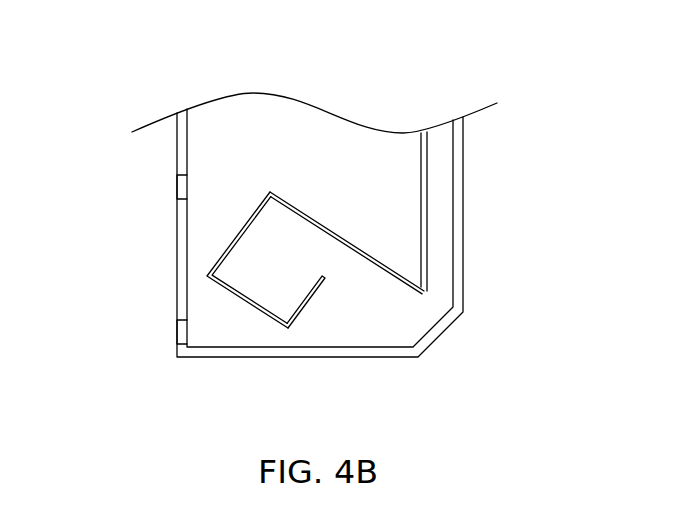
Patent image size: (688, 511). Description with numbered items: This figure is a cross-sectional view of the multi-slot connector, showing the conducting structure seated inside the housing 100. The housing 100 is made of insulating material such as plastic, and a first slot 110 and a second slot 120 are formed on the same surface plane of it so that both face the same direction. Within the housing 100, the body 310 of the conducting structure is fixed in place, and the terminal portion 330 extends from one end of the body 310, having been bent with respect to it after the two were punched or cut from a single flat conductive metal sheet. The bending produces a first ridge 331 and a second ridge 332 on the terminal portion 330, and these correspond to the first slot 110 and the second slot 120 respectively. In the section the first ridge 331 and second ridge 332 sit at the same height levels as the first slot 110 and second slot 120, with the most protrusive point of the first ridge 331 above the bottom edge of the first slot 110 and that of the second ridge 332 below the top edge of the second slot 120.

The housing 100 is at (458, 238).
The first slot 110 is at (173, 188).
The second slot 120 is at (173, 335).
The body 310 is at (425, 154).
The terminal portion 330 is at (360, 236).
The first ridge 331 is at (272, 190).
The second ridge 332 is at (289, 330).